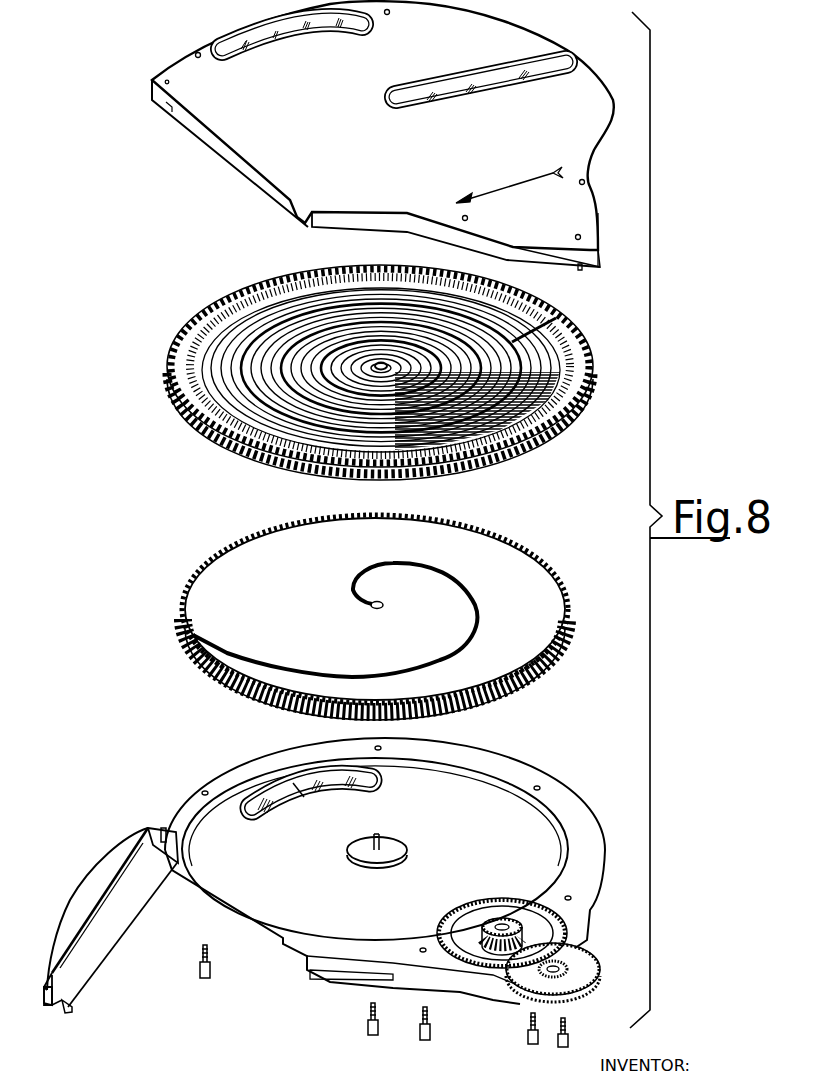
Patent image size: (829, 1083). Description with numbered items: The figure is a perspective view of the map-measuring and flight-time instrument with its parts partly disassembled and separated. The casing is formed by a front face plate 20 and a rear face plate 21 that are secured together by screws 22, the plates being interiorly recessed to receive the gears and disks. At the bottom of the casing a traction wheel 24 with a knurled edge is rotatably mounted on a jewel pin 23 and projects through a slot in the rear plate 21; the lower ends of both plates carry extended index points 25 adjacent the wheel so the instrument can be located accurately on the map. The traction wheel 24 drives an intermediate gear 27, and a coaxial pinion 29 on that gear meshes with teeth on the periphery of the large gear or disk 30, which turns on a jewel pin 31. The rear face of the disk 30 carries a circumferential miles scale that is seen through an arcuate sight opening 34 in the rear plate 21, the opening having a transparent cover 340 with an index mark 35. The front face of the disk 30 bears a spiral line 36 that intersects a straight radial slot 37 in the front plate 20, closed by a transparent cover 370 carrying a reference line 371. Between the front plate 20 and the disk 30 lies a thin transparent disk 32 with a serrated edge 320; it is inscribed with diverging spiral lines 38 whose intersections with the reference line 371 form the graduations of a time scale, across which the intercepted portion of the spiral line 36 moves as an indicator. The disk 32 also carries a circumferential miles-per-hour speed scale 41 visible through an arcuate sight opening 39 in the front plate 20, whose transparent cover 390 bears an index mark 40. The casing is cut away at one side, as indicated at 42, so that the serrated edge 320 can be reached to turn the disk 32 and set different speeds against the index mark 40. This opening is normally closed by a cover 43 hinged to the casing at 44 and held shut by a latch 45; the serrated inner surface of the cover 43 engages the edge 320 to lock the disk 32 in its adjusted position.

The front face plate 20 is at (263, 155).
The cut away 42 is at (280, 188).
The arcuate sight opening 39 is at (223, 43).
The index mark 40 is at (300, 33).
The transparent cover 390 is at (337, 33).
The reference line 371 is at (425, 98).
The radial slot 37 is at (461, 86).
The transparent cover 370 is at (502, 76).
The jewel pin 23 is at (580, 236).
The index points 25 is at (583, 270).
The spiral lines 38 is at (543, 326).
The speed scale 41 is at (560, 356).
The transparent disk 32 is at (584, 368).
The serrated edge 320 is at (566, 416).
The spiral line 36 is at (465, 578).
The gear or disk 30 is at (548, 608).
The arcuate sight opening 34 is at (255, 795).
The transparent cover 340 is at (275, 795).
The index mark 35 is at (303, 790).
The hinge 44 is at (161, 827).
The cover 43 is at (70, 888).
The latch 45 is at (64, 1010).
The jewel pin 31 is at (380, 835).
The rear face plate 21 is at (570, 812).
The pinion 29 is at (503, 920).
The intermediate gear 27 is at (560, 930).
The traction wheel 24 is at (572, 980).
The screws 22 is at (370, 1040).